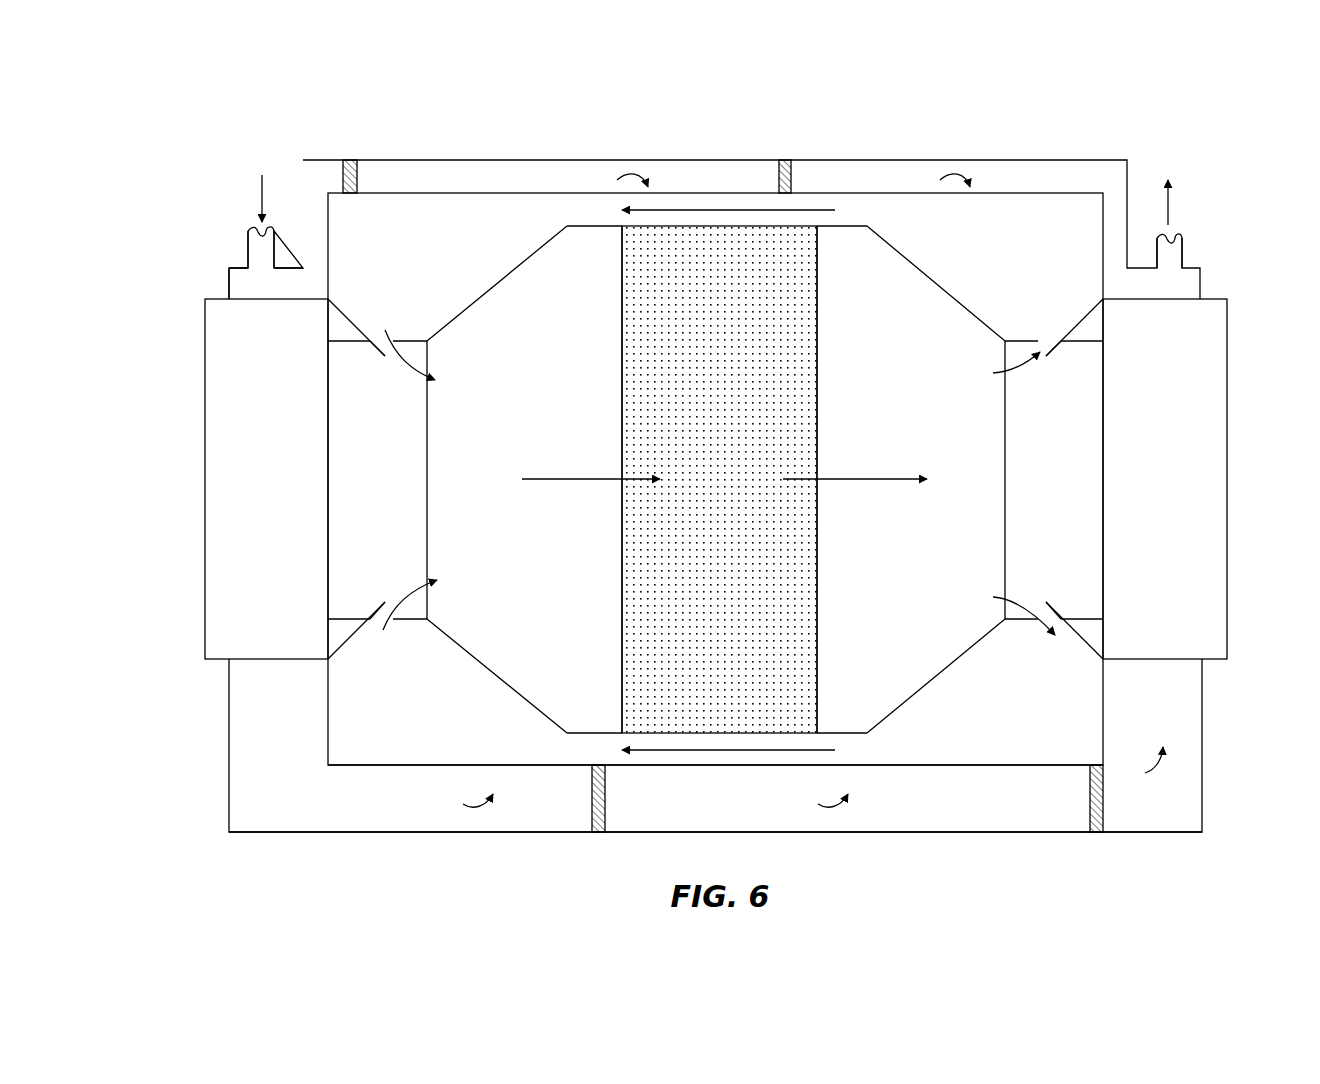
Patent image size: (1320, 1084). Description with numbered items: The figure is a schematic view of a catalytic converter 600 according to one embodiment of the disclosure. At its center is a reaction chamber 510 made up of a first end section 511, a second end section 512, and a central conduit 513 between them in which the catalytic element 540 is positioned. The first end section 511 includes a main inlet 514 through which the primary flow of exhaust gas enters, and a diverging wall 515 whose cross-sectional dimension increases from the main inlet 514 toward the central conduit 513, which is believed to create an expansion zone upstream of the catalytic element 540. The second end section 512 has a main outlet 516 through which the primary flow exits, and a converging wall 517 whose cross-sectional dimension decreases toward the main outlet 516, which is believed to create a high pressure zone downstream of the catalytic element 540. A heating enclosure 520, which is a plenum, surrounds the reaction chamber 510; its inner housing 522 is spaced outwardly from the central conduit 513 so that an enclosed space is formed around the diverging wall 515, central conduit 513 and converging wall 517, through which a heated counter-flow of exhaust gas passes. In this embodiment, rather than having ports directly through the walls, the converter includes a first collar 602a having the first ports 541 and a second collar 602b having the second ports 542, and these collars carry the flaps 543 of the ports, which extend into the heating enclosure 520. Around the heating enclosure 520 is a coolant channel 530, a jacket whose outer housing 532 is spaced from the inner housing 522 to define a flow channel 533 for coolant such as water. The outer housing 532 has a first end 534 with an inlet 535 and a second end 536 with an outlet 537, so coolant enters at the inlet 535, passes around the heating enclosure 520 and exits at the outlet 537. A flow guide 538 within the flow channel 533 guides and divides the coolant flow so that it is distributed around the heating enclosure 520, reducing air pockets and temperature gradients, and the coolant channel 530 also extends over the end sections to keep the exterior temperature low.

The catalytic converter 600 is at (1075, 134).
The reaction chamber 510 is at (533, 283).
The first end section 511 is at (590, 228).
The second end section 512 is at (841, 228).
The central conduit 513 is at (722, 228).
The main inlet 514 is at (205, 332).
The diverging wall 515 is at (497, 297).
The main outlet 516 is at (1227, 355).
The converging wall 517 is at (940, 298).
The heating enclosure 520 is at (343, 709).
The inner housing 522 is at (350, 765).
The coolant channel 530 is at (250, 754).
The outer housing 532 is at (229, 832).
The flow channel 533 is at (250, 286).
The first end 534 is at (237, 264).
The inlet 535 is at (255, 233).
The second end 536 is at (1185, 264).
The outlet 537 is at (1187, 233).
The flow guide 538 is at (352, 160).
The catalytic element 540 is at (643, 380).
The first ports 541 is at (1026, 340).
The second ports 542 is at (405, 340).
The flaps 543 is at (383, 357).
The first collar 602a is at (372, 655).
The second collar 602b is at (1063, 283).